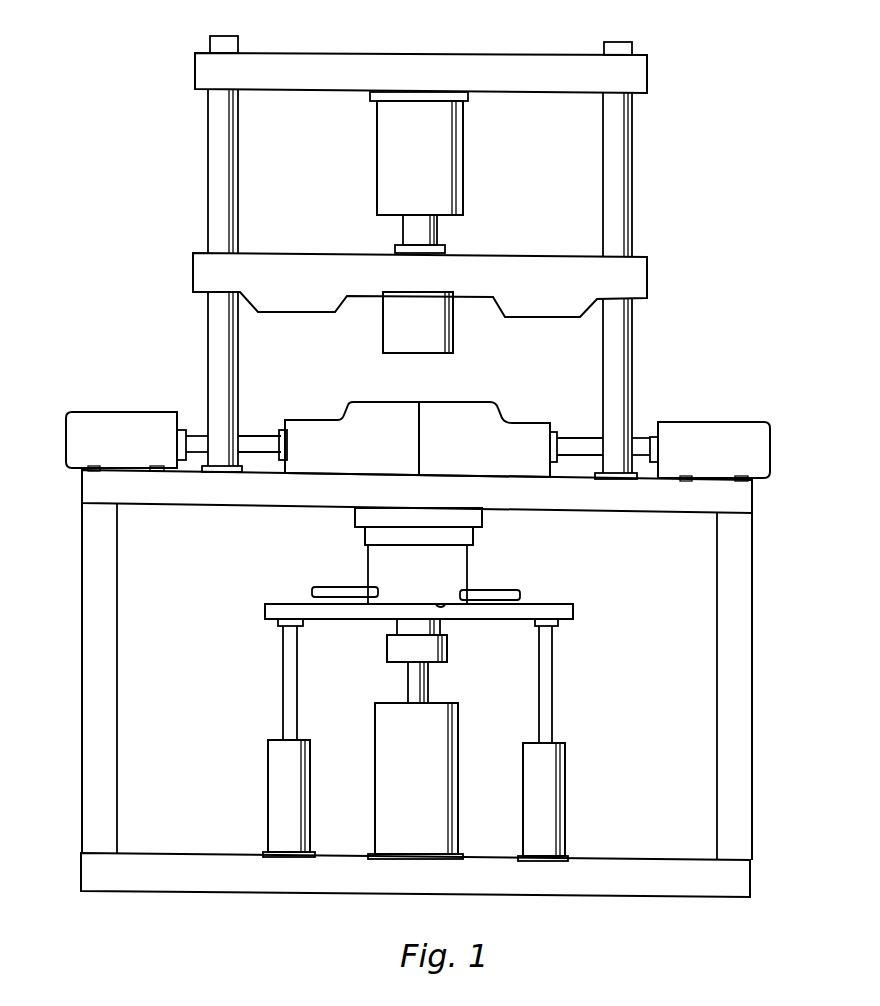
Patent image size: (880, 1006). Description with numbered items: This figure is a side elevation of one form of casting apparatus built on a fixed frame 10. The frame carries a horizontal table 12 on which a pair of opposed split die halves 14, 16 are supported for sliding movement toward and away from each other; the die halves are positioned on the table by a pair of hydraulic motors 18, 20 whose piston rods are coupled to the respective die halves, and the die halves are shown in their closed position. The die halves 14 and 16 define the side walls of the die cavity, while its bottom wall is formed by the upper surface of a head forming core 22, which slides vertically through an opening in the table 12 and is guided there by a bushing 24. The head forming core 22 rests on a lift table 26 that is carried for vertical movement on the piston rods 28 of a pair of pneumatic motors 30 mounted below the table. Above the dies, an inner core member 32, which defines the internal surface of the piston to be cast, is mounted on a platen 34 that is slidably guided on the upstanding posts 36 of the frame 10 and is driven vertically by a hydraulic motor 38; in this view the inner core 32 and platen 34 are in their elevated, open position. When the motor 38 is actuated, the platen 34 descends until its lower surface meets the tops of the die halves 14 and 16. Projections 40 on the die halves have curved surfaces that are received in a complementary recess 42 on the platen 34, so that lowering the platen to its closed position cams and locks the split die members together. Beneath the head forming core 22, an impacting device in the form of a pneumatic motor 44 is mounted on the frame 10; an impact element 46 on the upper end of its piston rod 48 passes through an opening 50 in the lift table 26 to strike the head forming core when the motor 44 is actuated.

The fixed frame 10 is at (778, 574).
The horizontal table 12 is at (625, 506).
The split die half 14 is at (293, 421).
The split die half 16 is at (519, 425).
The hydraulic motor 18 is at (119, 418).
The hydraulic motor 20 is at (705, 427).
The head forming core 22 is at (475, 536).
The bushing 24 is at (484, 516).
The lift table 26 is at (576, 612).
The piston rod 28 is at (283, 694).
The pneumatic motor 30 is at (268, 794).
The inner core member 32 is at (454, 333).
The platen 34 is at (534, 263).
The upstanding post 36 is at (208, 155).
The hydraulic motor 38 is at (416, 166).
The projection 40 is at (380, 406).
The recess 42 is at (412, 298).
The pneumatic motor 44 is at (422, 746).
The impact element 46 is at (449, 652).
The piston rod 48 is at (429, 683).
The opening 50 is at (443, 613).